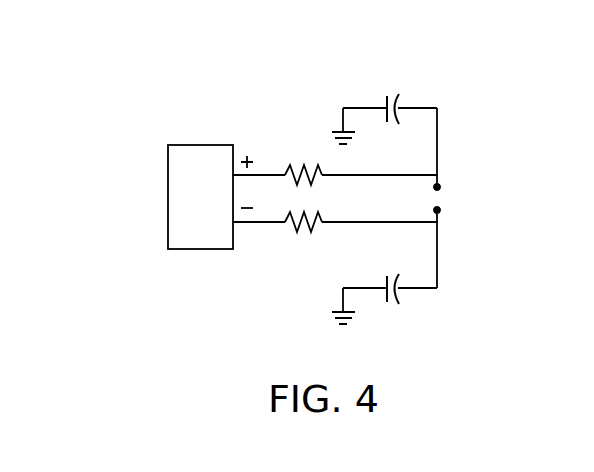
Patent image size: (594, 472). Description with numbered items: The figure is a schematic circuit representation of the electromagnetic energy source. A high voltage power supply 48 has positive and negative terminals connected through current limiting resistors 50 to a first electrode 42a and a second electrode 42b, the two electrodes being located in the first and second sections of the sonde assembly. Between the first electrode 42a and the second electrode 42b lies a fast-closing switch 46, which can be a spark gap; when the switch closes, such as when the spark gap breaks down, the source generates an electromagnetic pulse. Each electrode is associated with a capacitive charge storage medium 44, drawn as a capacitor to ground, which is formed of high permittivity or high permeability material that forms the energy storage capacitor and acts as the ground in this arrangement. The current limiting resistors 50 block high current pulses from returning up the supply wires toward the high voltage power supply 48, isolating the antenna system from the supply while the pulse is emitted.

The high voltage power supply 48 is at (195, 145).
The current limiting resistors 50 is at (293, 230).
The capacitive charge storage medium 44 is at (392, 93).
The second electrode 42b is at (437, 138).
The first electrode 42a is at (437, 253).
The fast-closing switch 46 is at (440, 195).